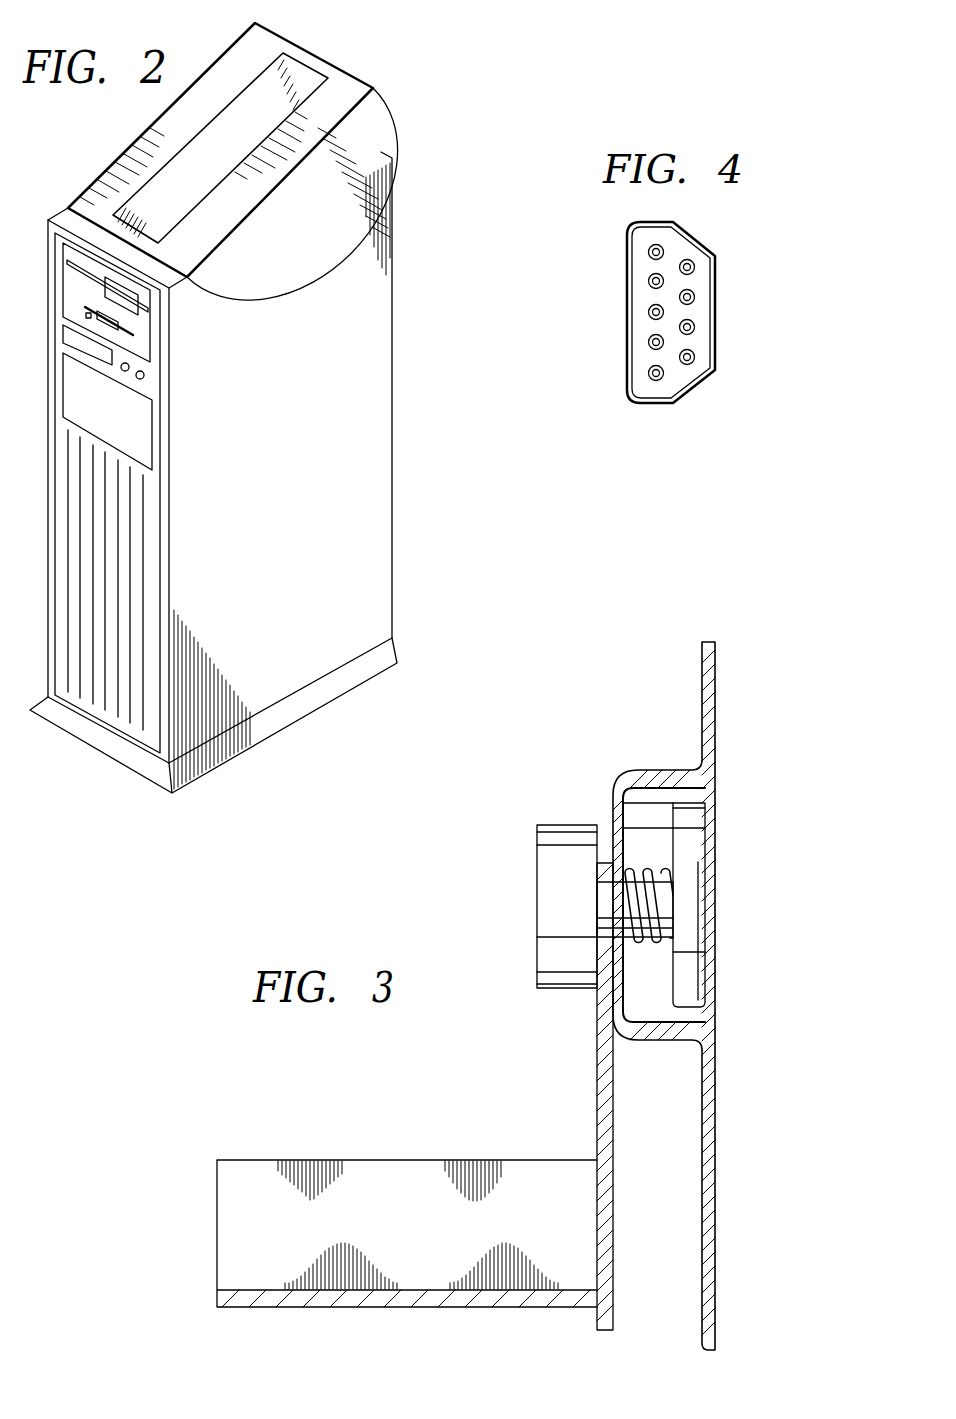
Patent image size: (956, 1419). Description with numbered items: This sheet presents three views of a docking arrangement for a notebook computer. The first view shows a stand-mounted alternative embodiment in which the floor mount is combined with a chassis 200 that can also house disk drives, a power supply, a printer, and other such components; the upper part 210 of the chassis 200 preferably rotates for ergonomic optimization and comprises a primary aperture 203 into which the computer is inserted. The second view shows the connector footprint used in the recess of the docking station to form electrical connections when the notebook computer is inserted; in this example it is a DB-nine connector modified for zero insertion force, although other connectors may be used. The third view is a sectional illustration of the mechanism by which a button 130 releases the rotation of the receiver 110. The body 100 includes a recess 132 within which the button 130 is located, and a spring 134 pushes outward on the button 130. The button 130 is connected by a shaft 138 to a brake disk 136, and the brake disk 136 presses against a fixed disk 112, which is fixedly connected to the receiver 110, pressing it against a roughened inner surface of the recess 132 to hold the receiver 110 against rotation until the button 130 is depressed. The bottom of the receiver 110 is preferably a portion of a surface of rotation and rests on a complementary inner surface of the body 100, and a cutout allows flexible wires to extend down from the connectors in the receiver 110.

In FIG. 3, the body 100 is at (729, 734).
In FIG. 3, the receiver 110 is at (382, 1175).
In FIG. 3, the fixed disk 112 is at (595, 1067).
In FIG. 3, the button 130 is at (692, 920).
In FIG. 3, the recess 132 is at (648, 817).
In FIG. 3, the spring 134 is at (653, 898).
In FIG. 3, the brake disk 136 is at (545, 955).
In FIG. 3, the shaft 138 is at (605, 895).
In FIG. 2, the chassis 200 is at (303, 495).
In FIG. 2, the primary aperture 203 is at (300, 78).
In FIG. 2, the upper part 210 is at (233, 154).